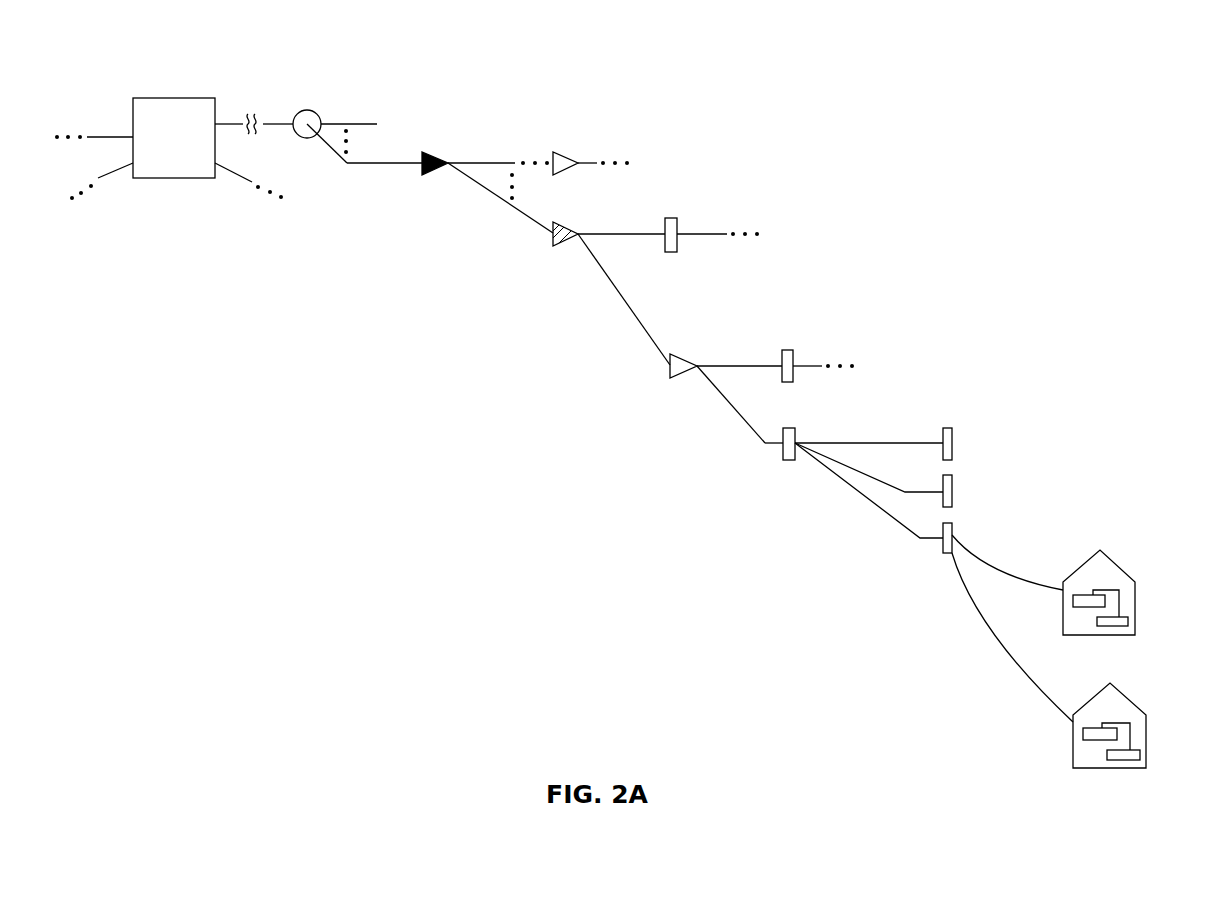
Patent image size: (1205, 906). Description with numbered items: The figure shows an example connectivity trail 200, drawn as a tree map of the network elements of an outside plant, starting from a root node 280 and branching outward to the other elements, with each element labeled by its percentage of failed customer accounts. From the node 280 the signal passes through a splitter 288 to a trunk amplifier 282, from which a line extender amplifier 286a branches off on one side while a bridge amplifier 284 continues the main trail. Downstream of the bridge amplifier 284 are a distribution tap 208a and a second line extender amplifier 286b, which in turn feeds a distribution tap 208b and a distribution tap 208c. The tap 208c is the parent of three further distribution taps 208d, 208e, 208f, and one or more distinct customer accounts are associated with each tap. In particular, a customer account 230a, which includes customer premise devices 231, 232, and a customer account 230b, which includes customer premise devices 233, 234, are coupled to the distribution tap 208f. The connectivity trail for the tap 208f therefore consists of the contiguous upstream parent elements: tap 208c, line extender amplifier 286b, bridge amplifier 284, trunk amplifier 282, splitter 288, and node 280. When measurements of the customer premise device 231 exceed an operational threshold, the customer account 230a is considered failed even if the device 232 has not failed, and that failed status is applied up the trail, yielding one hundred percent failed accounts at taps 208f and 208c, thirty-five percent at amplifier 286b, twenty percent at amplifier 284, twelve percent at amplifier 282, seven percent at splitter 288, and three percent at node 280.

The connectivity trail 200 is at (1130, 51).
The node 280 is at (174, 151).
The splitter 288 is at (307, 110).
The trunk amplifier 282 is at (438, 152).
The line extender amplifier 286a is at (565, 152).
The bridge amplifier 284 is at (560, 222).
The distribution tap 208a is at (671, 218).
The line extender amplifier 286b is at (685, 354).
The distribution tap 208b is at (790, 350).
The distribution tap 208c is at (789, 428).
The distribution tap 208d is at (953, 436).
The distribution tap 208e is at (953, 483).
The distribution tap 208f is at (953, 529).
The customer account 230a is at (1068, 589).
The customer account 230b is at (1084, 728).
The customer premise device 231 is at (1073, 601).
The customer premise device 232 is at (1097, 623).
The customer premise device 233 is at (1083, 734).
The customer premise device 234 is at (1117, 762).